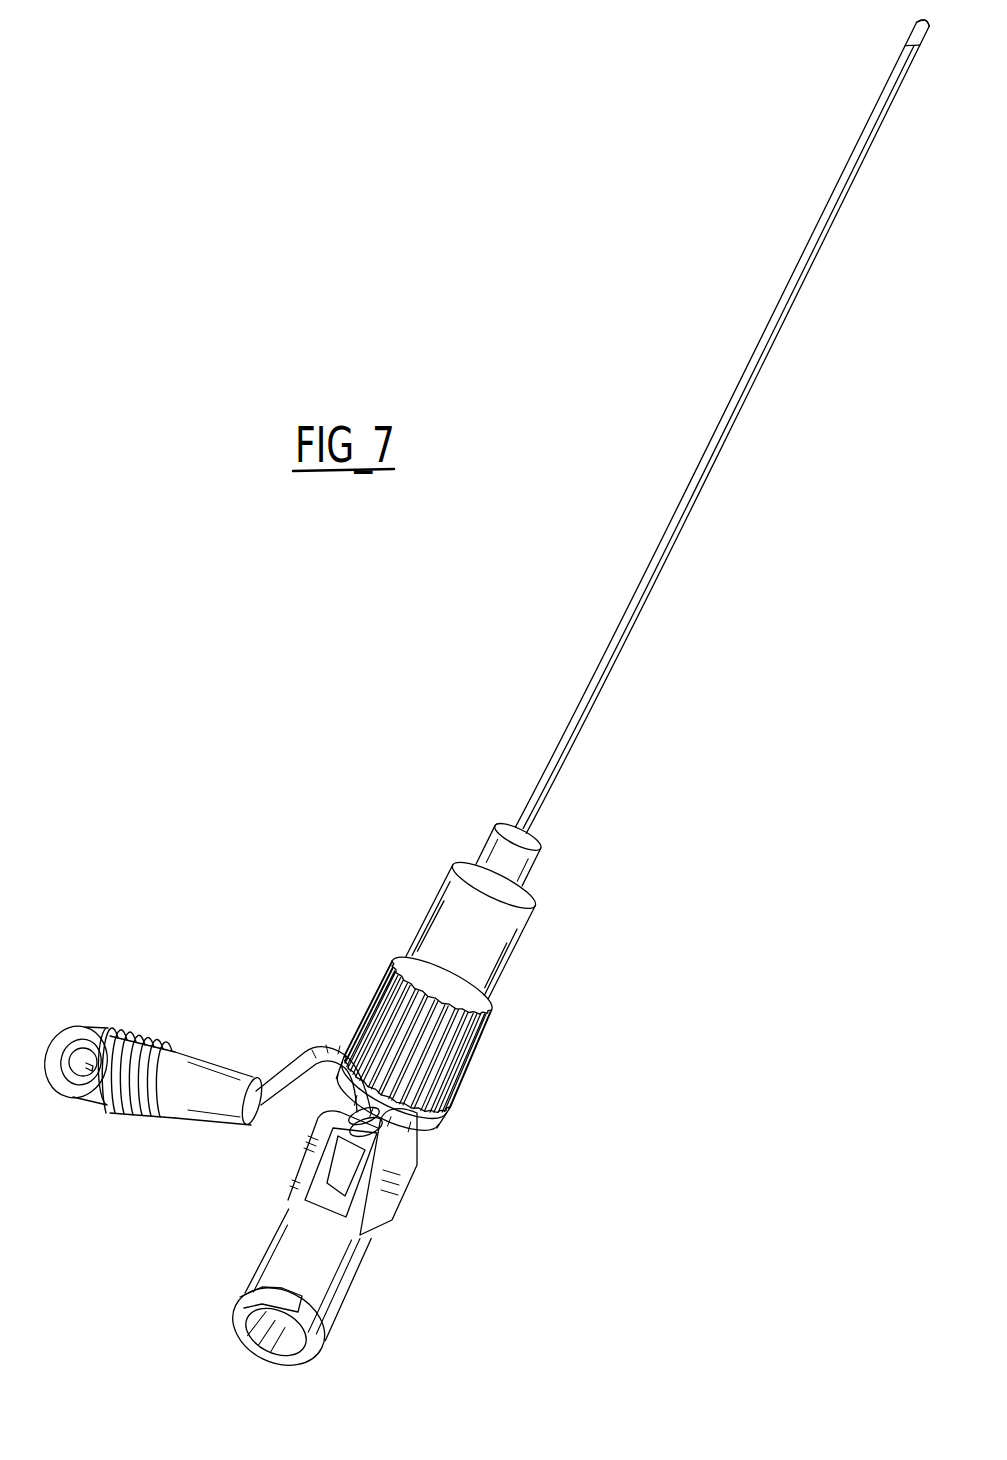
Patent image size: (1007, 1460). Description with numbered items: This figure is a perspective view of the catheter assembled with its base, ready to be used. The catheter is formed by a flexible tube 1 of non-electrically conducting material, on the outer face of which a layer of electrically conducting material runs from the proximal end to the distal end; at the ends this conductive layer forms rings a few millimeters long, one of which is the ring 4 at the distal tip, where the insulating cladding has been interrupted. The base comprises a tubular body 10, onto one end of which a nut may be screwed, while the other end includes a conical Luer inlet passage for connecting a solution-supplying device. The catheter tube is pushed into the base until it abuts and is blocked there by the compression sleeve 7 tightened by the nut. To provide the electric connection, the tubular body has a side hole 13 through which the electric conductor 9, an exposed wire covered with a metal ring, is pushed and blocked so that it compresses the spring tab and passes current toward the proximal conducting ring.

The flexible tube 1 is at (712, 450).
The ring 4 is at (920, 33).
The compression sleeve 7 is at (463, 1048).
The electric conductor 9 is at (295, 1068).
The tubular body 10 is at (320, 1270).
The side hole 13 is at (388, 1128).